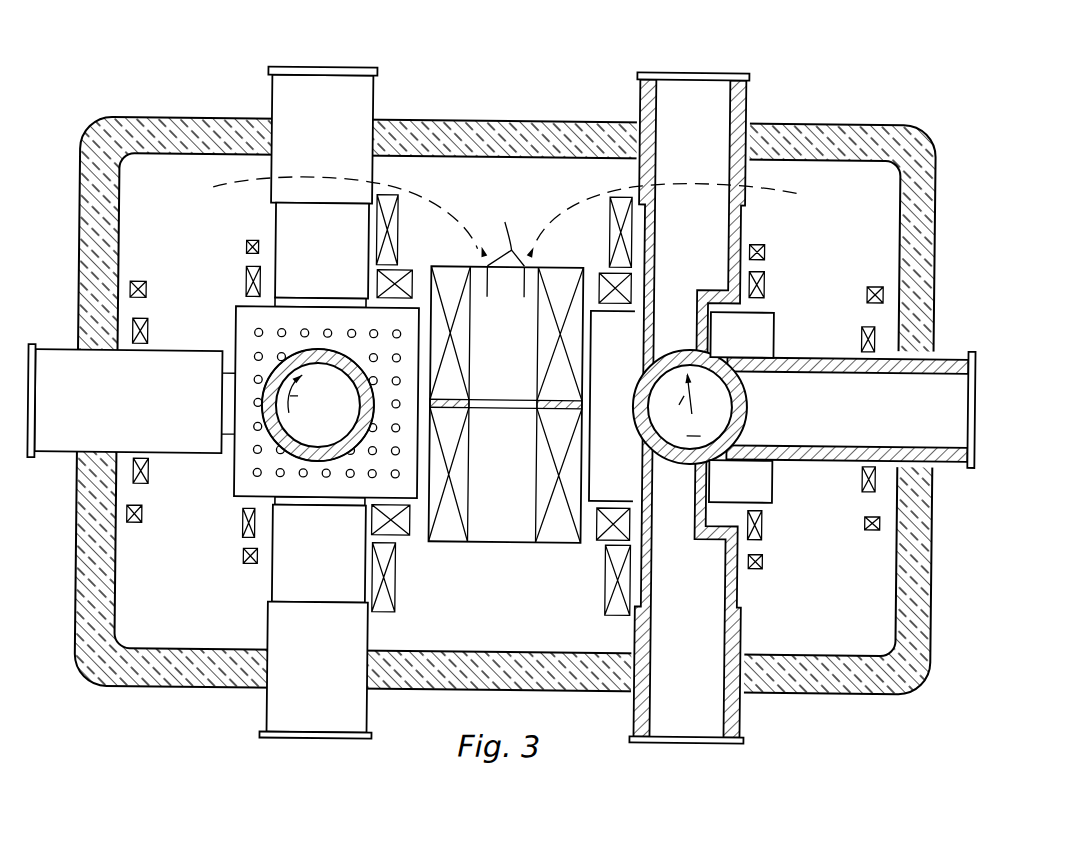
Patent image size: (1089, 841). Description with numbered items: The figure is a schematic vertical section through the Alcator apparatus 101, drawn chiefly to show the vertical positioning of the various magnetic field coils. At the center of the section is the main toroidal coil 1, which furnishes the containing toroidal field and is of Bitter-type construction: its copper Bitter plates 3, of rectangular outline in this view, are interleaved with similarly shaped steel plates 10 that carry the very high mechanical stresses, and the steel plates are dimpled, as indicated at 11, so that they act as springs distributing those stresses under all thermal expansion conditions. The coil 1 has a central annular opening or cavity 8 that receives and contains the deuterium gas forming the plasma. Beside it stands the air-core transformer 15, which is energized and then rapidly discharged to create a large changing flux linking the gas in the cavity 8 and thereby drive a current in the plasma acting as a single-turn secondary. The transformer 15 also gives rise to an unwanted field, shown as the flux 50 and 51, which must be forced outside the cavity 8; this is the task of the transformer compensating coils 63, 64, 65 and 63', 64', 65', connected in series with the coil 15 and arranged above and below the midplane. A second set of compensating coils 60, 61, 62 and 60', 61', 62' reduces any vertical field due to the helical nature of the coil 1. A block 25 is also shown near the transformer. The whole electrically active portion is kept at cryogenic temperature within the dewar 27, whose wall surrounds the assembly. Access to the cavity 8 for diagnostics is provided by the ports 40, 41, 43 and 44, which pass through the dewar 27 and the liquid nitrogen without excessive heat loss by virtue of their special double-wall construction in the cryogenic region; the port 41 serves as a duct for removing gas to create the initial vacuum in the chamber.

The toroidal coil 1 is at (783, 331).
The Bitter plates 3 is at (737, 326).
The central annular opening or cavity 8 is at (710, 399).
The steel plates 10 is at (404, 465).
The dimples 11 is at (338, 406).
The air-core transformer 15 is at (452, 541).
The support block 25 is at (591, 361).
The dewar 27 is at (930, 144).
The port 40 is at (53, 458).
The port 41 is at (376, 120).
The port 43 is at (746, 124).
The port 44 is at (944, 462).
The flux 50 is at (763, 184).
The flux 51 is at (457, 217).
The compensating coil 60 is at (504, 260).
The compensating coil 60' is at (500, 548).
The compensating coil 61 is at (508, 277).
The compensating coil 61' is at (516, 535).
The compensating coil 62 is at (504, 328).
The compensating coil 62' is at (504, 474).
The compensating coil 63 is at (504, 231).
The compensating coil 63' is at (501, 589).
The compensating coil 64 is at (516, 228).
The compensating coil 64' is at (493, 568).
The compensating coil 65 is at (507, 268).
The compensating coil 65' is at (503, 566).
The Alcator apparatus 101 is at (545, 373).